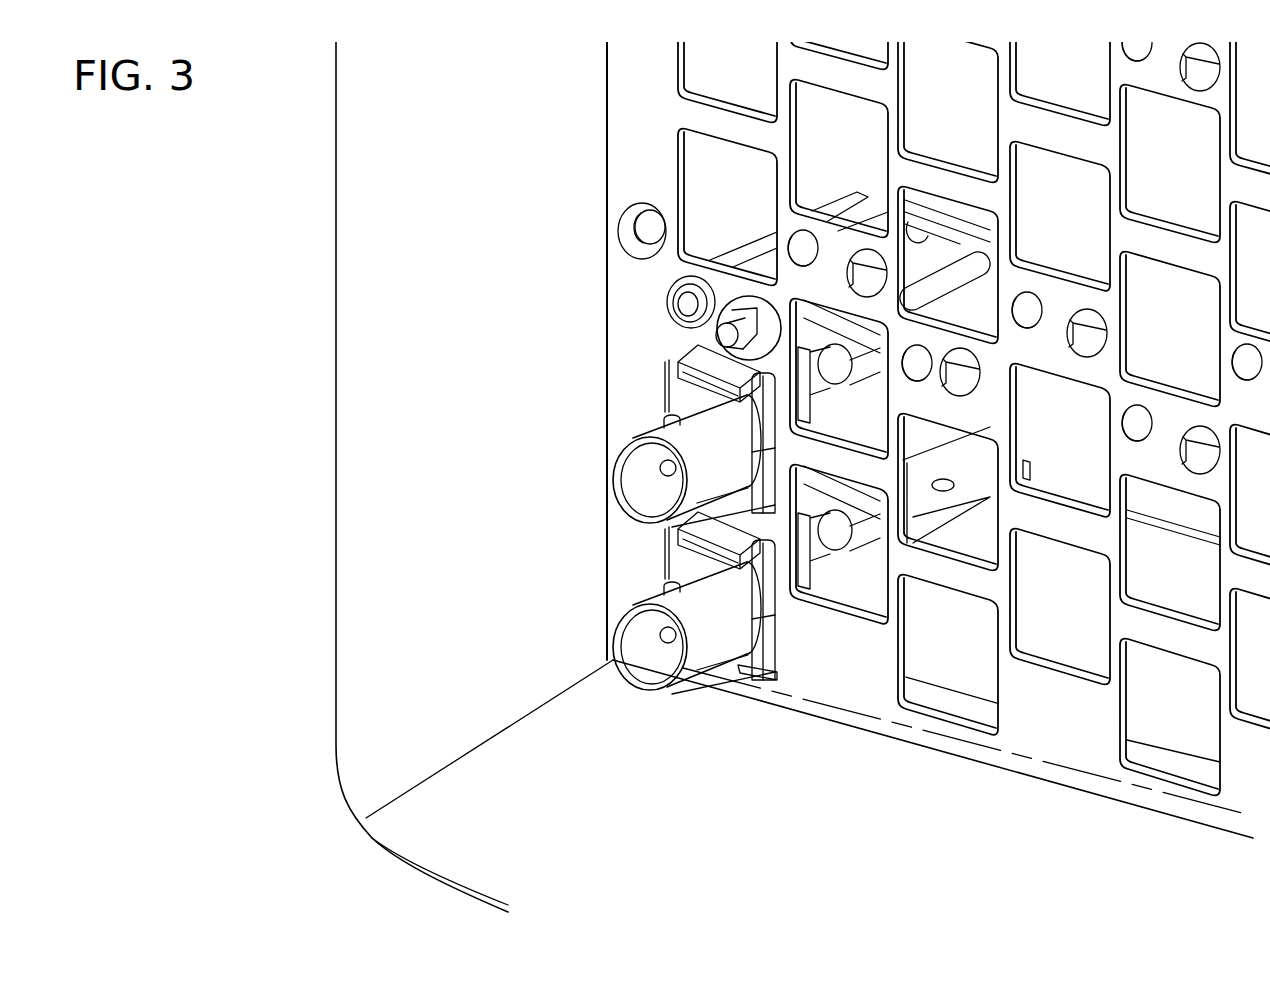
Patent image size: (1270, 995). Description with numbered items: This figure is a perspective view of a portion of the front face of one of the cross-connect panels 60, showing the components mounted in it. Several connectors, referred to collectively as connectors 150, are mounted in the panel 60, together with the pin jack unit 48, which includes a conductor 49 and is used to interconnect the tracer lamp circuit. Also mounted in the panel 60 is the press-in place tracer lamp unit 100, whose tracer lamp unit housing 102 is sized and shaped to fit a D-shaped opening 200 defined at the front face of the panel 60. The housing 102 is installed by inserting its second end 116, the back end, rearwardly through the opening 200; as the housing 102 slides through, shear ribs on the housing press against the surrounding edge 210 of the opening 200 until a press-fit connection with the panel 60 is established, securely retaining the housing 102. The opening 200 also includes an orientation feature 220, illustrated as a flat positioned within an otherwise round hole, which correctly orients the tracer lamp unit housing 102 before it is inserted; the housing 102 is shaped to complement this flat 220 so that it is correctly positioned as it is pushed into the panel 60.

The pin jack unit 48 is at (670, 300).
The conductor 49 is at (858, 205).
The panel 60 is at (840, 686).
The tracer lamp unit 100 is at (778, 298).
The tracer lamp unit housing 102 is at (812, 310).
The second end 116 is at (922, 245).
The connectors 150 is at (614, 489).
The D-shaped opening 200 is at (952, 388).
The surrounding edge 210 is at (972, 360).
The orientation feature 220 is at (958, 373).